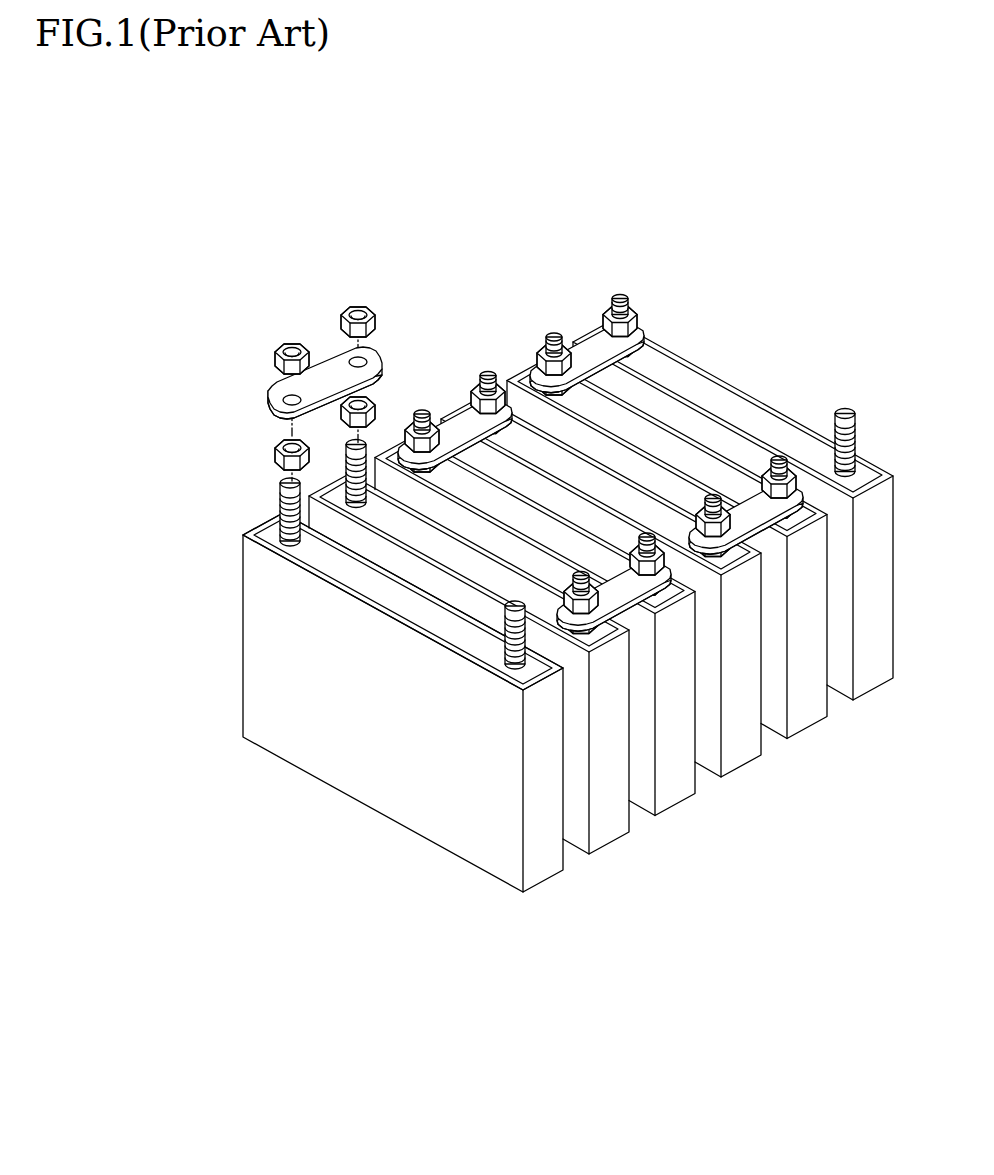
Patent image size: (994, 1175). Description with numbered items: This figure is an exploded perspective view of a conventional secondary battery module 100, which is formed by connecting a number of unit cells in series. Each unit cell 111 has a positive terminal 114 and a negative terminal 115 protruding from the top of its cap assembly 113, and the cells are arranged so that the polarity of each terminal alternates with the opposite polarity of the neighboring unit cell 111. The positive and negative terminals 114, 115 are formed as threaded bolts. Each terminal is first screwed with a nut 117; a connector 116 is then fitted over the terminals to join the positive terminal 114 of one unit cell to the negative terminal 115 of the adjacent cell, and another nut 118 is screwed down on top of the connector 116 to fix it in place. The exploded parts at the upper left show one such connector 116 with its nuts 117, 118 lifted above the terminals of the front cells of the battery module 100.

The battery module 100 is at (531, 626).
The unit cell 111 is at (568, 638).
The cap assembly 113 is at (325, 566).
The positive terminal 114 is at (284, 507).
The negative terminal 115 is at (371, 455).
The connector 116 is at (332, 368).
The nut 117 is at (274, 450).
The nut 118 is at (274, 356).